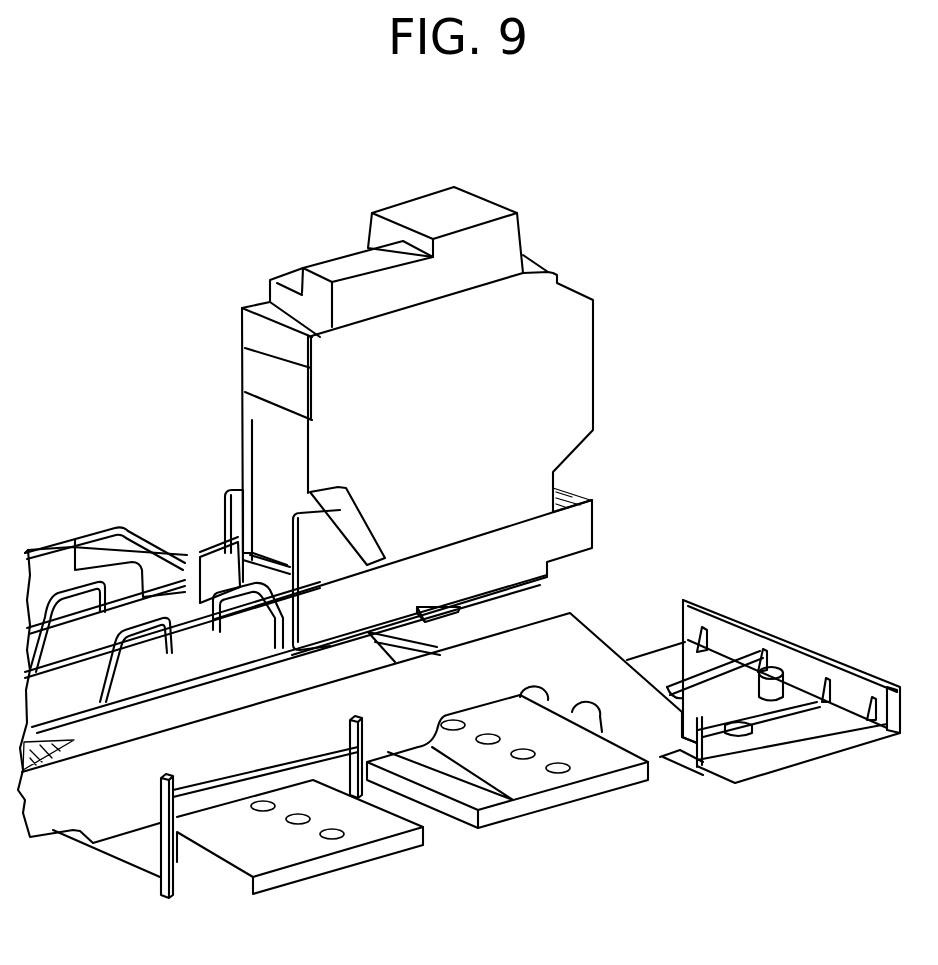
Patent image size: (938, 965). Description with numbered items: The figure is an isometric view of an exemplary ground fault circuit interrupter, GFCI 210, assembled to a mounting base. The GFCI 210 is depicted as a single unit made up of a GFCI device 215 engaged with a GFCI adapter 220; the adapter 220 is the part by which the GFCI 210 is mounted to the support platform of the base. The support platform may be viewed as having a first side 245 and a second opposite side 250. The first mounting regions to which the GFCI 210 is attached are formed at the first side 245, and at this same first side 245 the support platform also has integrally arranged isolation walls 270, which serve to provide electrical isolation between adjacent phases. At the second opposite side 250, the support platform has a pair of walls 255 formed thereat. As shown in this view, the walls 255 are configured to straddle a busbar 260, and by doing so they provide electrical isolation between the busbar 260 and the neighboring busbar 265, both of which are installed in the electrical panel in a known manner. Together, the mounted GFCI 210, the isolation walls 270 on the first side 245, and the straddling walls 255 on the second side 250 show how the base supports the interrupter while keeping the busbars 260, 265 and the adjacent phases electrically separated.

The GFCI 210 is at (469, 372).
The GFCI device 215 is at (583, 285).
The GFCI adapter 220 is at (595, 526).
The first side 245 is at (72, 698).
The second opposite side 250 is at (118, 873).
The walls 255 is at (175, 890).
The busbar 260 is at (345, 868).
The busbar 265 is at (602, 793).
The isolation walls 270 is at (108, 600).